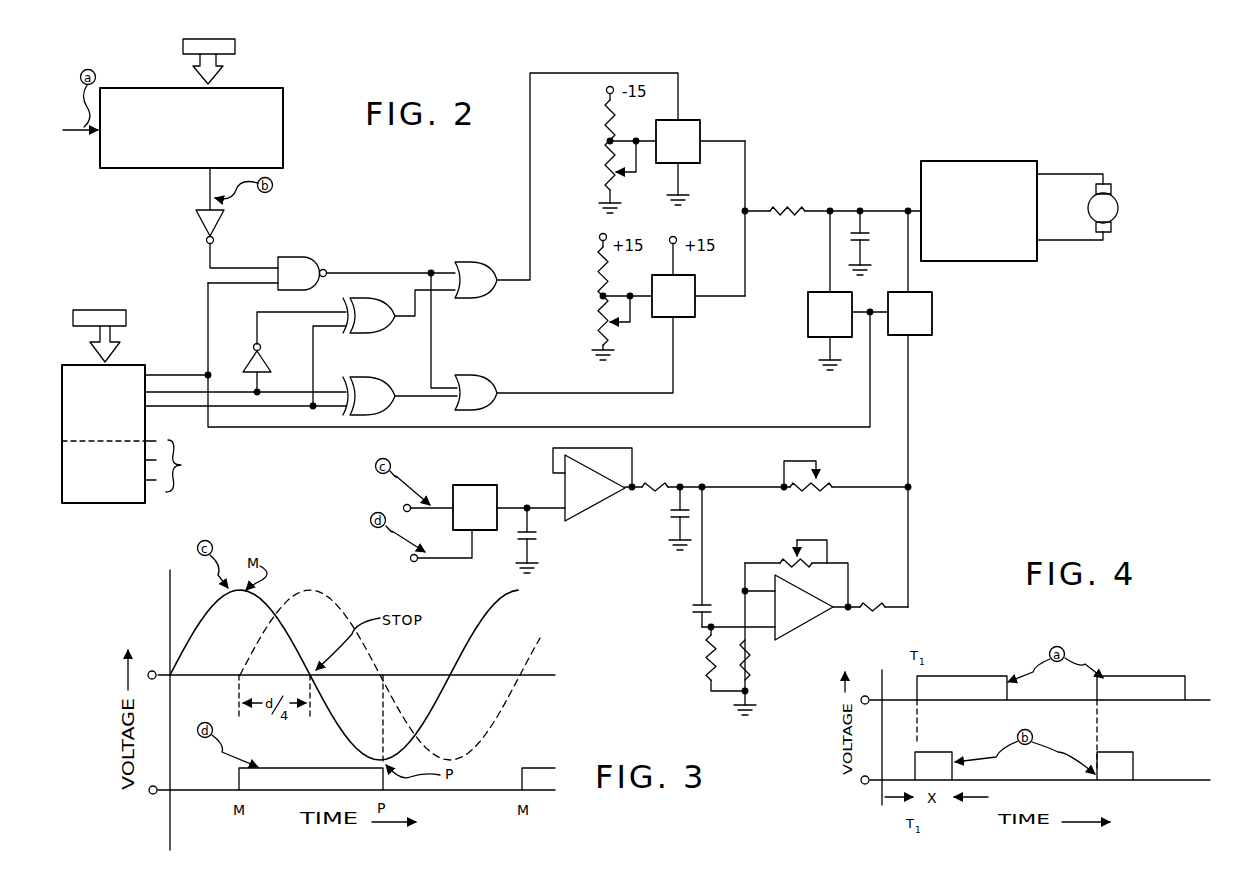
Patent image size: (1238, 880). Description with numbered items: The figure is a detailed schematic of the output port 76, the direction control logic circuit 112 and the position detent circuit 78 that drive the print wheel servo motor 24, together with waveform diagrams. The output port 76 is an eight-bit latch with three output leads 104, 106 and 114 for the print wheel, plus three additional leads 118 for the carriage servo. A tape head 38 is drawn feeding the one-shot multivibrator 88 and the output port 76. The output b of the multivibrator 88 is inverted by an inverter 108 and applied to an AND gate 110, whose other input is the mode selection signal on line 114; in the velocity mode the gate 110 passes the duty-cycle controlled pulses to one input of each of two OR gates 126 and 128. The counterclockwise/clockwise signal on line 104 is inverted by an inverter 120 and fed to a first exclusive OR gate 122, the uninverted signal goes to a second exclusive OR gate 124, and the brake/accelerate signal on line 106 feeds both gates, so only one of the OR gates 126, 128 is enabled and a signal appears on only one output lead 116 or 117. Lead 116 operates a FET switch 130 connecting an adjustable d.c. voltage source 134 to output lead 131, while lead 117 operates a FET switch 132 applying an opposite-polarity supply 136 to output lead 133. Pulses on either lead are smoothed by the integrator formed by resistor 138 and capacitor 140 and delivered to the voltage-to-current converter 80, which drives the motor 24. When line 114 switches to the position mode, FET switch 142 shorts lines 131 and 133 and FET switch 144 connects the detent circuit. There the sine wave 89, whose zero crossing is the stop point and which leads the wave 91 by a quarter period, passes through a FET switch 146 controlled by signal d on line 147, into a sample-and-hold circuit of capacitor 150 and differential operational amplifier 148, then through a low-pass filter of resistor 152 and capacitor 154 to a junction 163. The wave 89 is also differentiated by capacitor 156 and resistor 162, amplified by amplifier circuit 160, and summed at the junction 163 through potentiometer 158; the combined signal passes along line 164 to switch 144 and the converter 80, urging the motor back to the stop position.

In FIG. 2, the print wheel servo motor 24 is at (1118, 207).
In FIG. 2, the tape head 38 is at (236, 46).
In FIG. 2, the output port 76 is at (133, 365).
In FIG. 2, the position detent circuit 78 is at (945, 363).
In FIG. 2, the voltage-to-current converter 80 is at (979, 211).
In FIG. 2, the one-shot multivibrator 88 is at (191, 128).
In FIG. 3, the sine wave 89 is at (272, 597).
In FIG. 3, the sine wave 91 is at (344, 593).
In FIG. 2, the counterclockwise/clockwise line 104 is at (252, 380).
In FIG. 2, the brake/accelerate line 106 is at (256, 407).
In FIG. 2, the inverter 108 is at (233, 227).
In FIG. 2, the AND gate 110 is at (292, 257).
In FIG. 2, the direction control logic circuit 112 is at (366, 264).
In FIG. 2, the mode selection line 114 is at (181, 373).
In FIG. 2, the output lead 116 is at (500, 292).
In FIG. 2, the output lead 117 is at (535, 392).
In FIG. 2, the additional leads 118 is at (183, 465).
In FIG. 2, the inverter 120 is at (248, 360).
In FIG. 2, the first exclusive OR gate 122 is at (362, 296).
In FIG. 2, the second exclusive OR gate 124 is at (366, 372).
In FIG. 2, the OR gate 126 is at (480, 260).
In FIG. 2, the OR gate 128 is at (492, 370).
In FIG. 2, the FET switch 130 is at (690, 120).
In FIG. 2, the output lead 131 is at (746, 178).
In FIG. 2, the FET switch 132 is at (697, 315).
In FIG. 2, the output lead 133 is at (746, 266).
In FIG. 2, the adjustable d.c. voltage source 134 is at (598, 160).
In FIG. 2, the supply 136 is at (592, 307).
In FIG. 2, the resistor 138 is at (792, 210).
In FIG. 2, the capacitor 140 is at (866, 242).
In FIG. 2, the FET switch 142 is at (808, 315).
In FIG. 2, the FET switch 144 is at (932, 314).
In FIG. 2, the FET switch 146 is at (475, 489).
In FIG. 2, the line 147 is at (456, 562).
In FIG. 2, the differential operational amplifier 148 is at (588, 512).
In FIG. 2, the capacitor 150 is at (540, 535).
In FIG. 2, the resistor 152 is at (668, 482).
In FIG. 2, the capacitor 154 is at (692, 520).
In FIG. 2, the capacitor 156 is at (694, 627).
In FIG. 2, the potentiometer 158 is at (828, 472).
In FIG. 2, the amplifier circuit 160 is at (814, 622).
In FIG. 2, the resistor 162 is at (700, 652).
In FIG. 2, the junction 163 is at (908, 487).
In FIG. 2, the feedback line 164 is at (908, 525).